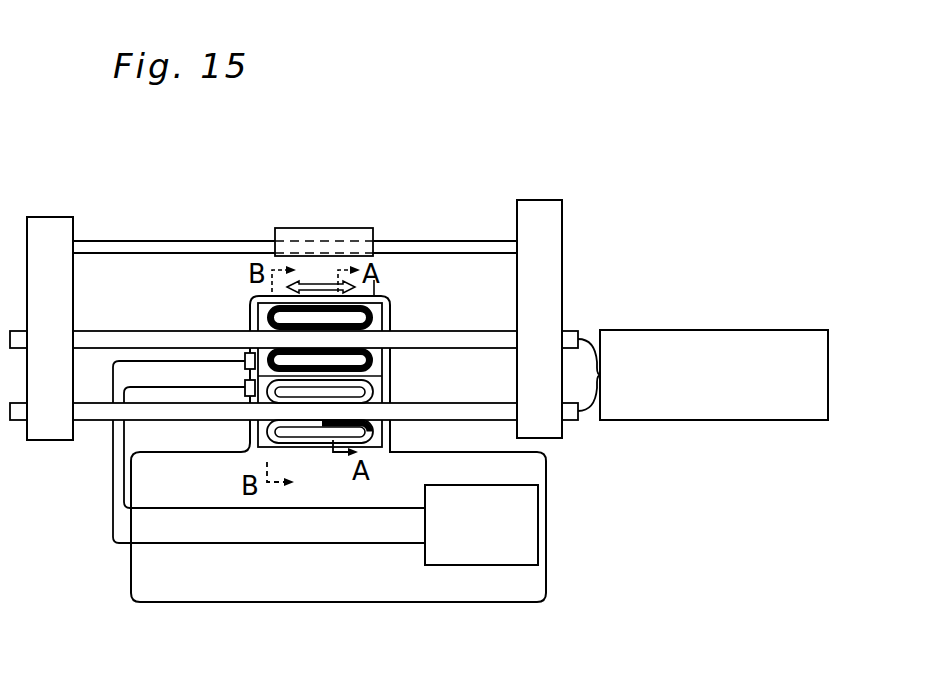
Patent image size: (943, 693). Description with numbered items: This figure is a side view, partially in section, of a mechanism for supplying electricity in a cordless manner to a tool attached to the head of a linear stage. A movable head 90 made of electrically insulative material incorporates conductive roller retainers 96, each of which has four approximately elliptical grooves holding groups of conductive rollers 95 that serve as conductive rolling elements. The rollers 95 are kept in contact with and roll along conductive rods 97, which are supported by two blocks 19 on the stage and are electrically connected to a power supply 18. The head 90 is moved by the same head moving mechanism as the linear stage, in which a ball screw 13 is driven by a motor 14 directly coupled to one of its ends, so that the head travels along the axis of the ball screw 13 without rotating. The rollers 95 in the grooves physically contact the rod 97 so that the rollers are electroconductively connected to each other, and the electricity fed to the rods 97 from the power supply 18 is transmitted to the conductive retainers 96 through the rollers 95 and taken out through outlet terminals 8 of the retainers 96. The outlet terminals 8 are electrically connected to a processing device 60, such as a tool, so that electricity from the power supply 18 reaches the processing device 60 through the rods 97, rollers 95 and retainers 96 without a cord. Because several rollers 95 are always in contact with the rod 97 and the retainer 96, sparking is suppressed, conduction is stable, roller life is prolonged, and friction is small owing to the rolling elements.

The outlet terminal 8 is at (245, 388).
The ball screw 13 is at (443, 247).
The motor 14 is at (546, 222).
The power supply 18 is at (660, 329).
The block 19 is at (38, 442).
The processing device 60 is at (499, 485).
The movable head 90 is at (451, 584).
The conductive roller 95 is at (386, 297).
The conductive roller retainer 96 is at (383, 392).
The conductive rod 97 is at (227, 338).